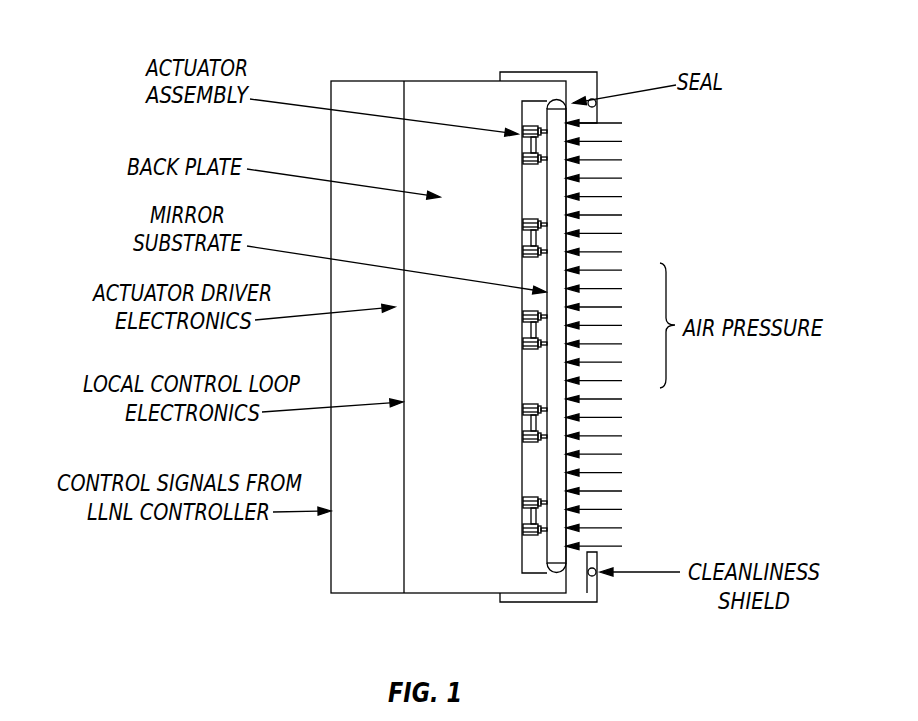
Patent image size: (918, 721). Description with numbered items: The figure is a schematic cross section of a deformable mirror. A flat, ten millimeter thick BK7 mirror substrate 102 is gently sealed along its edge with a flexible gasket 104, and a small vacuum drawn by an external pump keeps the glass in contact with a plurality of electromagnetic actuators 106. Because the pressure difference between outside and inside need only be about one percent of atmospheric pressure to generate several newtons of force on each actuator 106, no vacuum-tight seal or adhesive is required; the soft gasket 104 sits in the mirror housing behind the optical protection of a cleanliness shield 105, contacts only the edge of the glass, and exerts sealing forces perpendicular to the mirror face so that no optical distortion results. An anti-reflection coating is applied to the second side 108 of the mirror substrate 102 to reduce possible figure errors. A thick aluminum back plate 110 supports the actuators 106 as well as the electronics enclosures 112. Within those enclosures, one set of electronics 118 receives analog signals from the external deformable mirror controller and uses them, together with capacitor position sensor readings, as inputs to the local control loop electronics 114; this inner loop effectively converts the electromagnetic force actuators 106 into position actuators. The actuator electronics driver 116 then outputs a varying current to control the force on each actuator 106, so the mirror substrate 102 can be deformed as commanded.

The mirror substrate 102 is at (580, 370).
The flexible gasket 104 is at (609, 313).
The cleanliness shield 105 is at (630, 362).
The actuators 106 is at (489, 339).
The second side of the mirror substrate 108 is at (545, 549).
The back plate 110 is at (453, 374).
The electronics enclosures 112 is at (336, 551).
The local control loop electronics 114 is at (342, 306).
The actuator electronics driver 116 is at (462, 301).
The electronics 118 is at (301, 451).